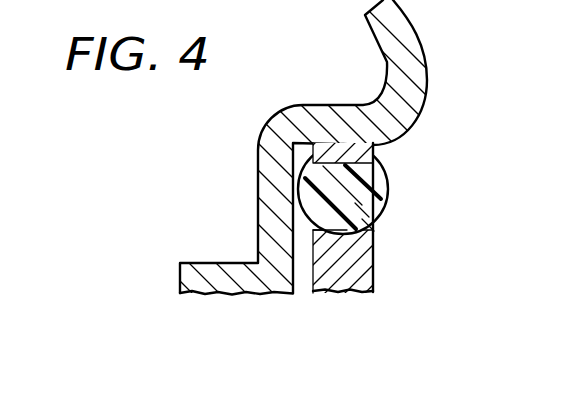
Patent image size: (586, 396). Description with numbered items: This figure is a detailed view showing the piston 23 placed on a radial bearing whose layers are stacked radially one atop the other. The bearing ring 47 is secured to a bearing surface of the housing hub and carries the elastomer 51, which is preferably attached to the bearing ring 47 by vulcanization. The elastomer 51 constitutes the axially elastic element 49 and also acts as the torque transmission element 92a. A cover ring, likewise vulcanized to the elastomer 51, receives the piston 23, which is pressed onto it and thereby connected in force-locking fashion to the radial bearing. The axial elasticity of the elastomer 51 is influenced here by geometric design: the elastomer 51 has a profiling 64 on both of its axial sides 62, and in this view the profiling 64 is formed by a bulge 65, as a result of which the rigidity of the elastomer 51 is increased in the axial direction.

The piston 23 is at (330, 108).
The bearing ring 47 is at (372, 180).
The axially elastic element 49 is at (374, 229).
The elastomer 51 is at (377, 232).
The axial sides 62 is at (298, 170).
The profiling 64 is at (301, 199).
The bulge 65 is at (303, 219).
The torque transmission element 92a is at (328, 292).